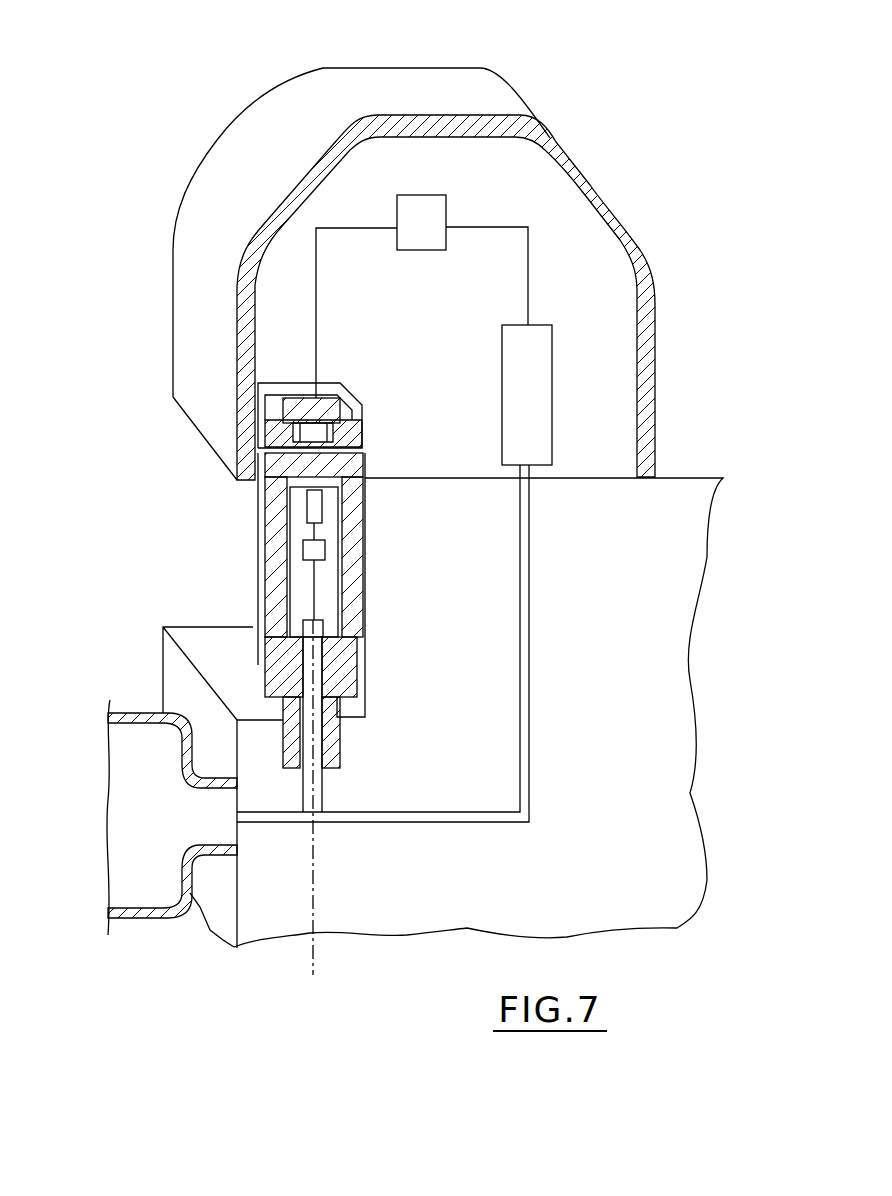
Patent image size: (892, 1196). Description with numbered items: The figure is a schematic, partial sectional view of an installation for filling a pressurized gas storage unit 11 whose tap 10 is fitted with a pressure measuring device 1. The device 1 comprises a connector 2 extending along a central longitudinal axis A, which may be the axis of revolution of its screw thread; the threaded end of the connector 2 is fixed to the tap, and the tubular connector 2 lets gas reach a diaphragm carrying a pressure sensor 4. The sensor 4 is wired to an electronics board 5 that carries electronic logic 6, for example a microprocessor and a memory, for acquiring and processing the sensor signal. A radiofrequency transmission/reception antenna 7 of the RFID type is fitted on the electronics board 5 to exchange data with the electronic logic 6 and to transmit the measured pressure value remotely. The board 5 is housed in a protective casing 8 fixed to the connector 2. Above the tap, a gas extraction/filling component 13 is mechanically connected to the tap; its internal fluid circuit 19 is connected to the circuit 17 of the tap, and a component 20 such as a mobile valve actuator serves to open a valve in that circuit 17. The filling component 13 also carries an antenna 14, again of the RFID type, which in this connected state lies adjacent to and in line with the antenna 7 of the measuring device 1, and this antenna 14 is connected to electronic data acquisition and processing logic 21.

The pressure measuring device 1 is at (250, 672).
The connector 2 is at (290, 742).
The pressure sensor 4 is at (310, 625).
The electronics board 5 is at (300, 592).
The electronic logic 6 is at (307, 550).
The transmission/reception antenna 7 is at (277, 525).
The protective casing 8 is at (307, 505).
The tap 10 is at (280, 907).
The pressurized gas storage unit 11 is at (162, 920).
The gas extraction/filling component 13 is at (588, 234).
The antenna 14 is at (305, 405).
The circuit 17 is at (438, 824).
The internal fluid circuit 19 is at (528, 305).
The mobile valve actuator 20 is at (535, 405).
The electronic data acquisition and processing logic 21 is at (402, 207).
The central longitudinal axis A is at (313, 947).